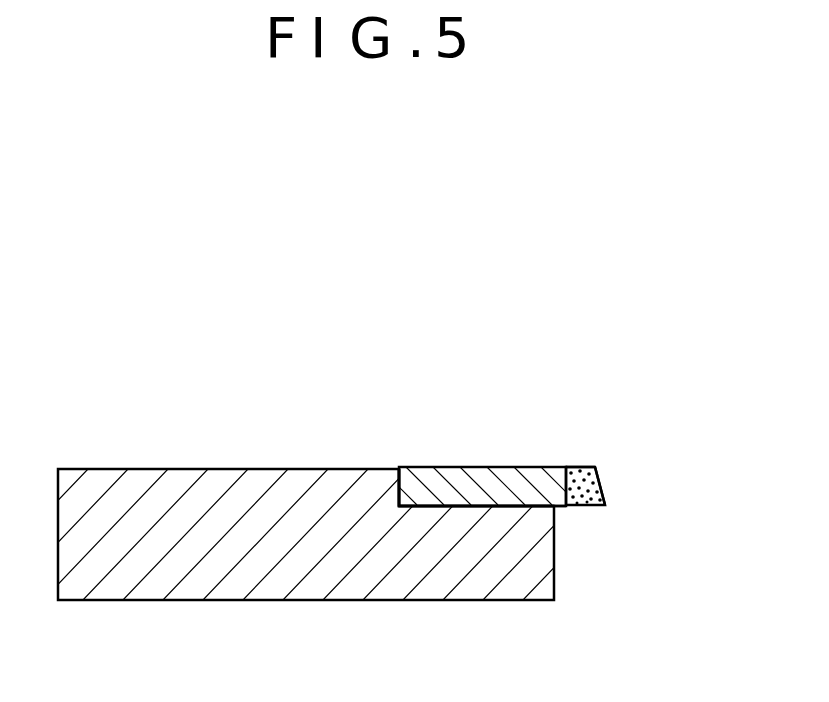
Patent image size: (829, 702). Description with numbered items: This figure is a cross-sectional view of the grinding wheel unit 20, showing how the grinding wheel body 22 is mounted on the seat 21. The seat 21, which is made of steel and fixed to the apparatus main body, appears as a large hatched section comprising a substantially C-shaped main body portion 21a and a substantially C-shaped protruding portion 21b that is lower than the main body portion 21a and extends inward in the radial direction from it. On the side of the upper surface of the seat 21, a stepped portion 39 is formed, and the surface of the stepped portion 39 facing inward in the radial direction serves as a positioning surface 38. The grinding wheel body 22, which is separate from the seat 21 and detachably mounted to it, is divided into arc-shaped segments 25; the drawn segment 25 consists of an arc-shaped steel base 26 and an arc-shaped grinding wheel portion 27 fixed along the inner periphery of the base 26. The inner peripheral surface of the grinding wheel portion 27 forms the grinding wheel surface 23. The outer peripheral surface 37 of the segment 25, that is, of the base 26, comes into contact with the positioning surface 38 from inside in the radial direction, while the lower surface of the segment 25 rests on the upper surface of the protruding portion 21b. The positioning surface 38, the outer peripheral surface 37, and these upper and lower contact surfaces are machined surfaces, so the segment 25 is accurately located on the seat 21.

The grinding wheel unit 20 is at (636, 432).
The seat 21 is at (78, 467).
The main body portion 21a is at (197, 503).
The protruding portion 21b is at (475, 580).
The grinding wheel body 22 is at (597, 473).
The grinding wheel surface 23 is at (602, 487).
The segment 25 is at (617, 373).
The base 26 is at (505, 477).
The grinding wheel portion 27 is at (587, 475).
The outer peripheral surface 37 is at (396, 493).
The positioning surface 38 is at (413, 494).
The stepped portion 39 is at (413, 495).